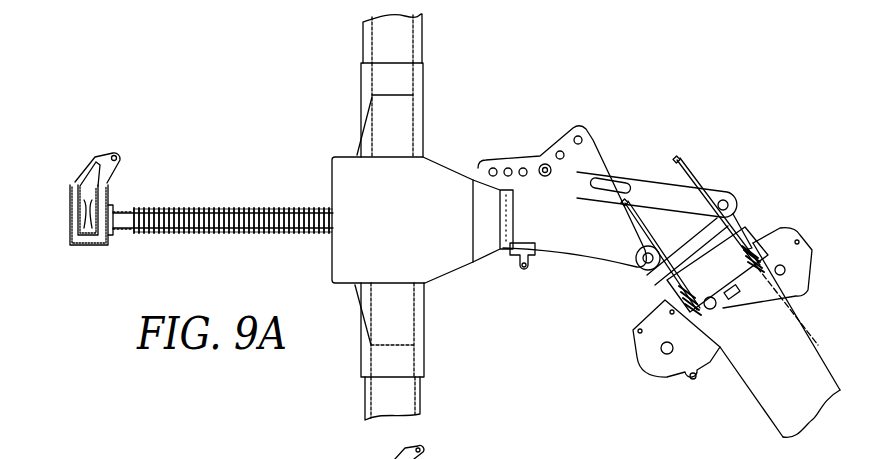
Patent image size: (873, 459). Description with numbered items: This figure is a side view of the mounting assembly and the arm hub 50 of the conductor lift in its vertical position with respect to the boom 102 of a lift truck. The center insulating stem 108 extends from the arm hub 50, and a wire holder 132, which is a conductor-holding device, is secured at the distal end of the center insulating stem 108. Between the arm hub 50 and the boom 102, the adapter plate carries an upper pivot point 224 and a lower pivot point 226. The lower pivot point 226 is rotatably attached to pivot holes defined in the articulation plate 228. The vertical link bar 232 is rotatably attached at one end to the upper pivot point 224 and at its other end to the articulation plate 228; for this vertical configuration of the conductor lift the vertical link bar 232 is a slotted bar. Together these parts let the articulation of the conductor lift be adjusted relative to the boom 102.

The arm hub 50 is at (478, 320).
The boom 102 is at (763, 387).
The center insulating stem 108 is at (263, 207).
The wire holder 132 is at (70, 203).
The upper pivot point 224 is at (723, 200).
The lower pivot point 226 is at (640, 270).
The articulation plate 228 is at (527, 185).
The vertical link bar 232 is at (602, 168).